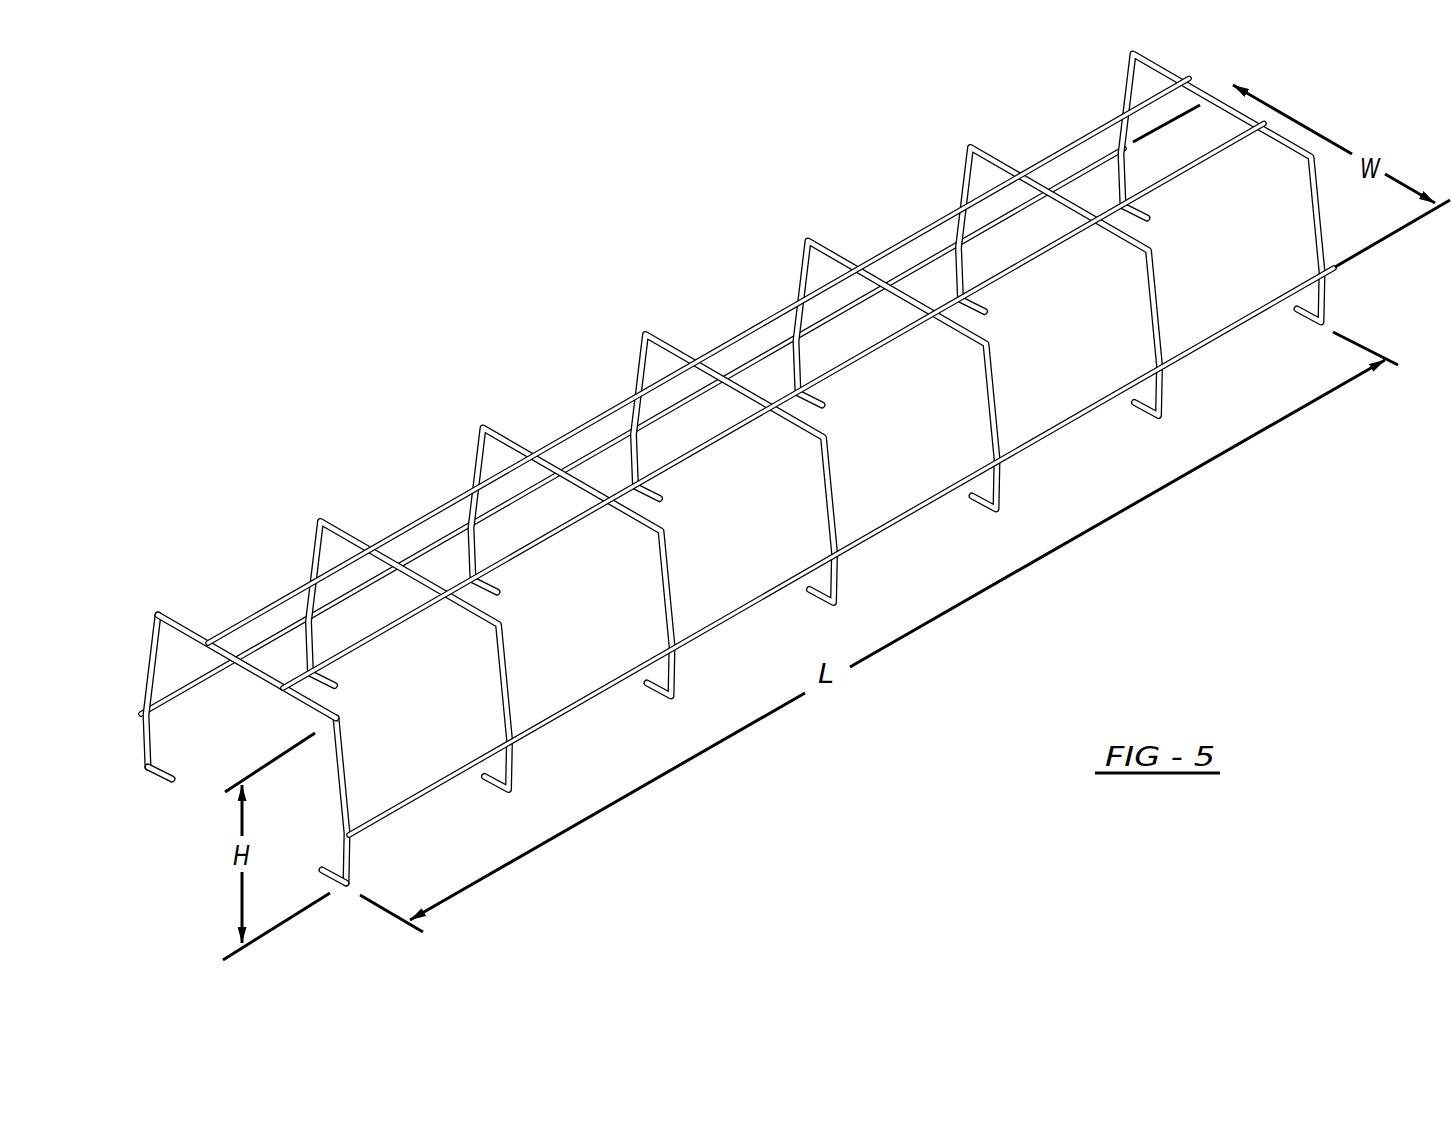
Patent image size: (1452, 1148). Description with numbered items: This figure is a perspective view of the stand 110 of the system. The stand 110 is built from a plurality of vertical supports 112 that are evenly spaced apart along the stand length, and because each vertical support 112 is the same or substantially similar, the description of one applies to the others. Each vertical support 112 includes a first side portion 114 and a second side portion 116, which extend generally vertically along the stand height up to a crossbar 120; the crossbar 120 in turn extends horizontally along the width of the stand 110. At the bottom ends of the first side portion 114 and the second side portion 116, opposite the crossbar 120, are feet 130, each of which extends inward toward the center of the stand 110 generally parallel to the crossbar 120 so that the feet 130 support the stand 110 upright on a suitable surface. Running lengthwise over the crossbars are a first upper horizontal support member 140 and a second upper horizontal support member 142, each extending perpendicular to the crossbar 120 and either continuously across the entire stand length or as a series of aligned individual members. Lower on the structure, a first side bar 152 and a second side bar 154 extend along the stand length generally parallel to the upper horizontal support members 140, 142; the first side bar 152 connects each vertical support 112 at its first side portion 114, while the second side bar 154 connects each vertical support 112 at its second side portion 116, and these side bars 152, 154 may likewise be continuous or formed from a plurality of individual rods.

The stand 110 is at (603, 258).
The vertical support 112 is at (1131, 58).
The first side portion 114 is at (147, 665).
The second side portion 116 is at (342, 802).
The crossbar 120 is at (185, 625).
The feet 130 is at (170, 779).
The first upper horizontal support member 140 is at (275, 600).
The second upper horizontal support member 142 is at (375, 637).
The first side bar 152 is at (200, 683).
The second side bar 154 is at (398, 810).